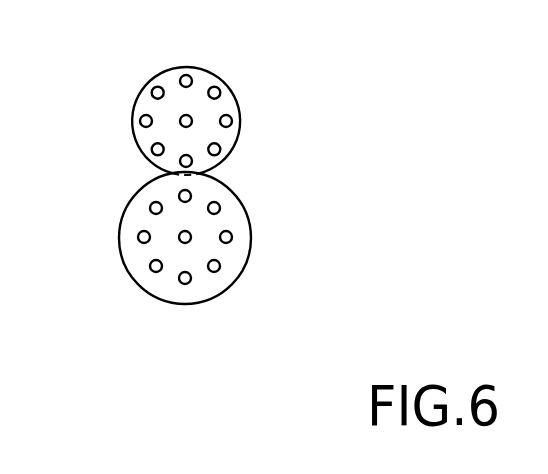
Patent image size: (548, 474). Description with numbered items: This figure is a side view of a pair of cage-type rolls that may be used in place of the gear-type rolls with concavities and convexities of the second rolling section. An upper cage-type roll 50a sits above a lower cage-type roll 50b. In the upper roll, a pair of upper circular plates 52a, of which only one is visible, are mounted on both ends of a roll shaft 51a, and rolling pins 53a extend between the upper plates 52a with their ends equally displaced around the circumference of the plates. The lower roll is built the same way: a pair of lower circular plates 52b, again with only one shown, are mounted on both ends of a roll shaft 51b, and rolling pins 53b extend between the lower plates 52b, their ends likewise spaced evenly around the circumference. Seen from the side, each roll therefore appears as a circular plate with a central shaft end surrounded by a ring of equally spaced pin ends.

The upper cage-type roll 50a is at (182, 93).
The roll shaft 51a is at (192, 119).
The upper circular plate 52a is at (215, 74).
The rolling pin 53a is at (133, 110).
The lower cage-type roll 50b is at (179, 247).
The roll shaft 51b is at (191, 239).
The lower circular plate 52b is at (140, 262).
The rolling pin 53b is at (232, 235).